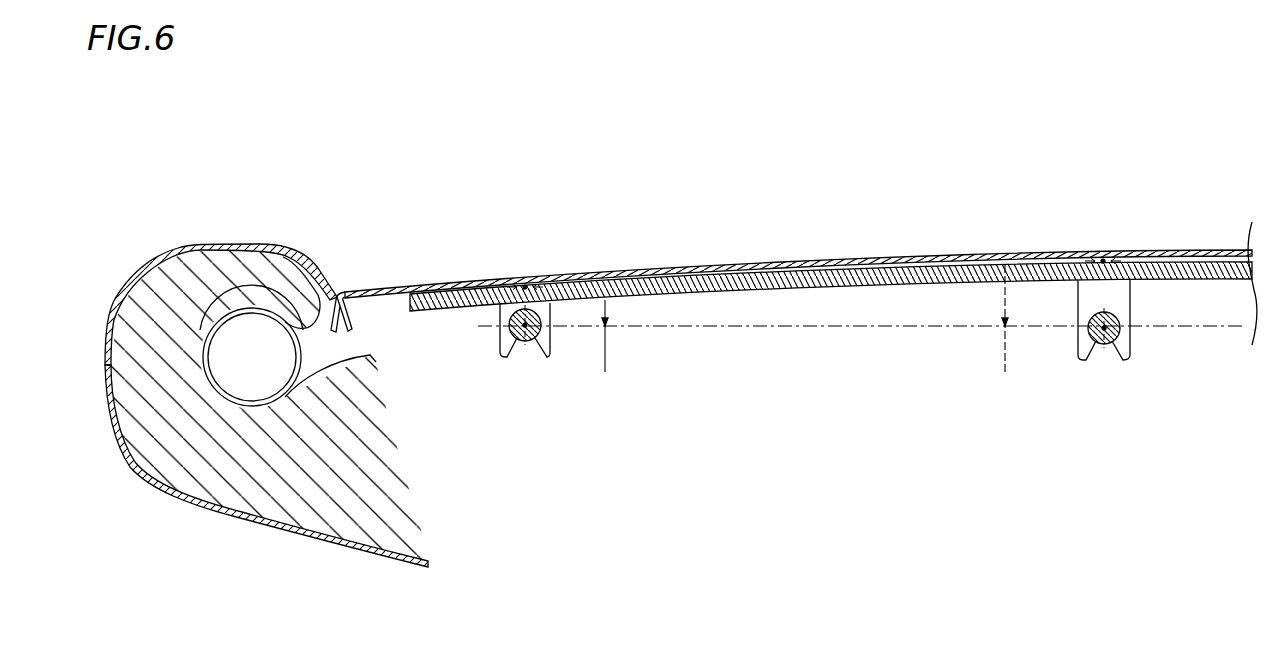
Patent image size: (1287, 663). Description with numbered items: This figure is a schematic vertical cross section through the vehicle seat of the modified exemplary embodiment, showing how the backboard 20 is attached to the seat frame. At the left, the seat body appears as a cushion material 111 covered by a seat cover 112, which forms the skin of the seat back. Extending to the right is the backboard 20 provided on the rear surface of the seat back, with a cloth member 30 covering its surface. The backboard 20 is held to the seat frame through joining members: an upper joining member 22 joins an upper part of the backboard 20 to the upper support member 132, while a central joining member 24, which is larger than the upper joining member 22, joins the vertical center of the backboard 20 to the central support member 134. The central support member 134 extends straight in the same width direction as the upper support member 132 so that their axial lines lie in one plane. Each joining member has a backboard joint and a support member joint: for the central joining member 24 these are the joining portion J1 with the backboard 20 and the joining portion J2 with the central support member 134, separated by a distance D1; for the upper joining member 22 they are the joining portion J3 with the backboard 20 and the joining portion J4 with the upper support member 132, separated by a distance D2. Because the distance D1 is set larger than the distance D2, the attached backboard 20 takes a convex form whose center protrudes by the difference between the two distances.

The backboard 20 is at (768, 291).
The upper joining member 22 is at (553, 348).
The central joining member 24 is at (1132, 350).
The cloth member 30 is at (425, 283).
The cushion material 111 is at (165, 432).
The seat cover 112 is at (219, 523).
The upper support member 132 is at (525, 347).
The central support member 134 is at (1098, 348).
The joining portion J1 is at (1105, 261).
The joining portion J2 is at (1106, 328).
The joining portion J3 is at (525, 287).
The joining portion J4 is at (523, 327).
The distance D1 is at (1023, 319).
The distance D2 is at (622, 336).